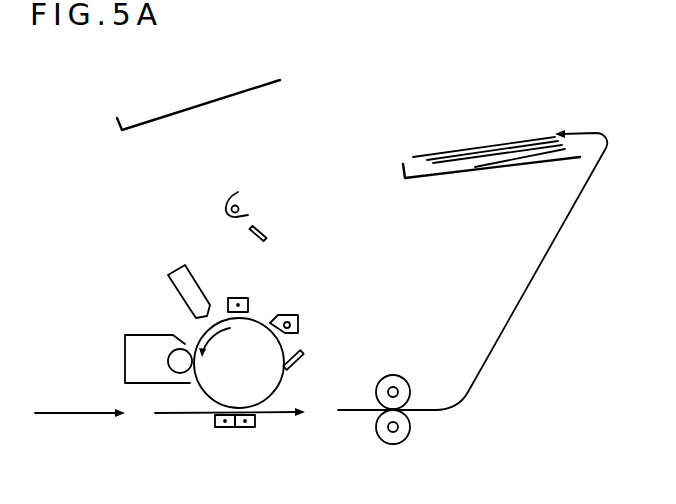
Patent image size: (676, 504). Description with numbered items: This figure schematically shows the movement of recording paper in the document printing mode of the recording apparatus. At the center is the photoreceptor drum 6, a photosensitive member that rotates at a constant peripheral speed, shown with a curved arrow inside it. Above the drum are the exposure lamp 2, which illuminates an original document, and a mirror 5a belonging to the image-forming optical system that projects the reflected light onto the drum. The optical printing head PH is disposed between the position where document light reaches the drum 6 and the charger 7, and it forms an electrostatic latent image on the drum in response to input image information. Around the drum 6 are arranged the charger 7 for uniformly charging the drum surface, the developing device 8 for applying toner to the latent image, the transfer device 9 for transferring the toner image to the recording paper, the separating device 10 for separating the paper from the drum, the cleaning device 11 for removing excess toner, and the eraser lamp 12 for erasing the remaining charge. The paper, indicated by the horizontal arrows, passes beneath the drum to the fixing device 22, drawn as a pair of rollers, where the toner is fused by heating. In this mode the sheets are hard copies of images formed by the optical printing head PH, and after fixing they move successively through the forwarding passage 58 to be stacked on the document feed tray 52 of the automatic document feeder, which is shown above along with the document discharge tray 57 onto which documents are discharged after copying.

The exposure lamp 2 is at (240, 206).
The mirror 5a is at (266, 235).
The optical printing head PH is at (165, 268).
The photoreceptor drum 6 is at (275, 385).
The charger 7 is at (248, 298).
The developing device 8 is at (127, 326).
The transfer device 9 is at (222, 428).
The separating device 10 is at (253, 428).
The cleaning device 11 is at (301, 355).
The eraser lamp 12 is at (298, 315).
The fixing device 22 is at (412, 438).
The document feed tray 52 is at (460, 172).
The document discharge tray 57 is at (243, 95).
The forwarding passage 58 is at (518, 310).